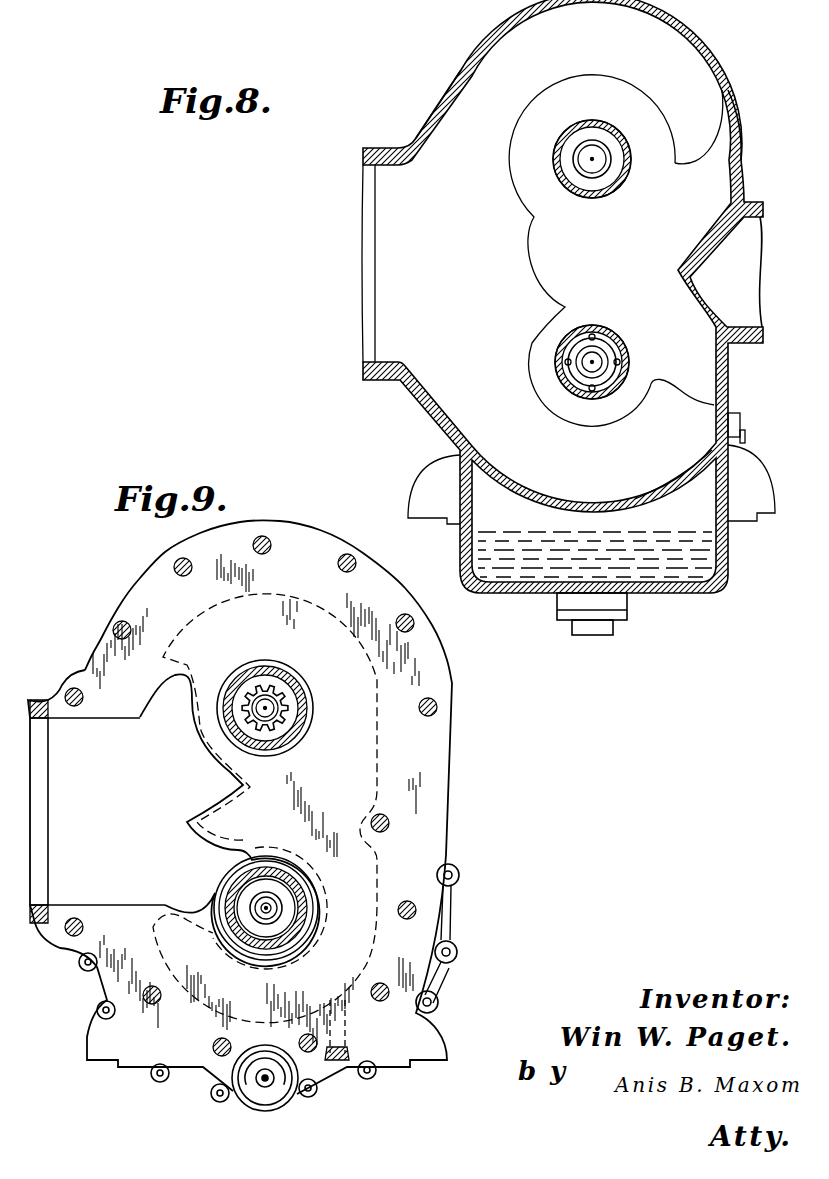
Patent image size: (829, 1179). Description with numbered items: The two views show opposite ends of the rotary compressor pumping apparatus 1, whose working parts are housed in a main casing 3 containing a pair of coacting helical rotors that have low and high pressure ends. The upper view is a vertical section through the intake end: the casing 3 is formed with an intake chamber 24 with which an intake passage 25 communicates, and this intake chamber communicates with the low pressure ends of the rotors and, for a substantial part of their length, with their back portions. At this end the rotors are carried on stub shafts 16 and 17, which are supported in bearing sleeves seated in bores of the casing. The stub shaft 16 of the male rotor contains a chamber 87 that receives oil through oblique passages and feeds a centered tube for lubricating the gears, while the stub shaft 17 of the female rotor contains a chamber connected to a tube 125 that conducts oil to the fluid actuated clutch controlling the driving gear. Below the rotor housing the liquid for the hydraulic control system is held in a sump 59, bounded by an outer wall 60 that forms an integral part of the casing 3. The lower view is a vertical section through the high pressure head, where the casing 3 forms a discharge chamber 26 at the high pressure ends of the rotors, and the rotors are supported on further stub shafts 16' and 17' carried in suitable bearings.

In FIG. 8, the pumping apparatus 1 is at (746, 30).
In FIG. 8, the main casing 3 is at (745, 114).
In FIG. 8, the intake passage 25 is at (490, 78).
In FIG. 9, the intake passage 25 is at (282, 910).
In FIG. 8, the intake chamber 24 is at (393, 200).
In FIG. 8, the stub shaft 16 is at (597, 155).
In FIG. 8, the chamber 87 is at (608, 173).
In FIG. 8, the stub shaft 17 is at (597, 350).
In FIG. 8, the tube 125 is at (607, 357).
In FIG. 8, the sump 59 is at (487, 527).
In FIG. 8, the outer wall 60 is at (512, 592).
In FIG. 9, the discharge chamber 26 is at (45, 883).
In FIG. 9, the stub shaft 16' is at (265, 699).
In FIG. 9, the stub shaft 17' is at (266, 895).